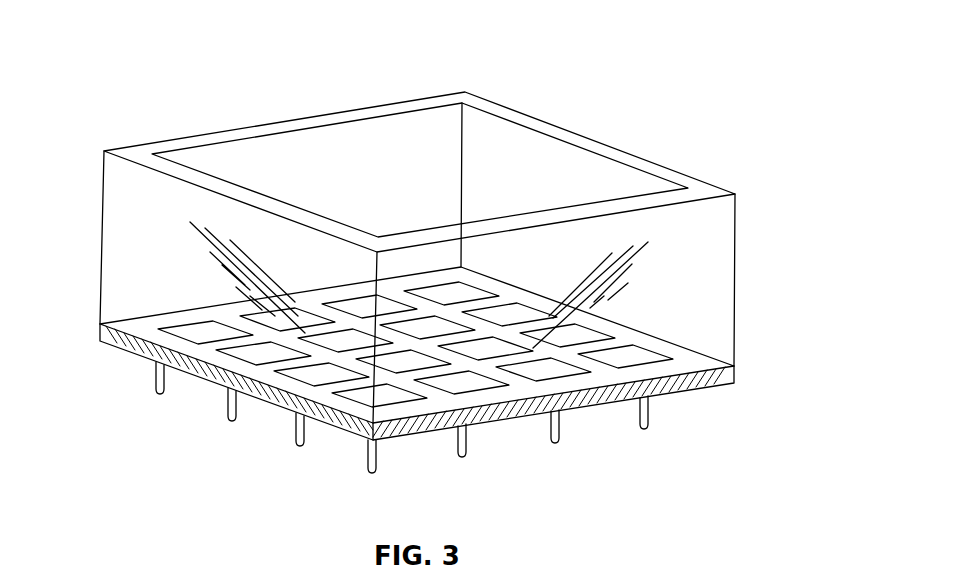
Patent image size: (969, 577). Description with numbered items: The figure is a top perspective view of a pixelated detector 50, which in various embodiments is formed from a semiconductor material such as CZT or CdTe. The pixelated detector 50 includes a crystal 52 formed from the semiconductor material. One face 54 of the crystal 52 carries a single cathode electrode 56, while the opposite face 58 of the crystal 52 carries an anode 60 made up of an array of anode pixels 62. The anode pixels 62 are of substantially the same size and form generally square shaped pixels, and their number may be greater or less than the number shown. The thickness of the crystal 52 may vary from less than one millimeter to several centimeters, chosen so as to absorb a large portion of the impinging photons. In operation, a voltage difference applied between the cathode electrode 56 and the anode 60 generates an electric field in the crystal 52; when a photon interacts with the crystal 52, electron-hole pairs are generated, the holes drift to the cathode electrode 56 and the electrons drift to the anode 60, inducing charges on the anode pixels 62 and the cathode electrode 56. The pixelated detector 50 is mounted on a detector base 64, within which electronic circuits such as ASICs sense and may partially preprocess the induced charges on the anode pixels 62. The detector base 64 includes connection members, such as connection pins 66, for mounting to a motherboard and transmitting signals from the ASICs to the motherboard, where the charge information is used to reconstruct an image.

The pixelated detector 50 is at (136, 40).
The crystal 52 is at (713, 303).
The face 54 is at (140, 155).
The cathode electrode 56 is at (322, 142).
The opposite face 58 is at (165, 362).
The anode 60 is at (135, 292).
The anode pixels 62 is at (193, 332).
The detector base 64 is at (265, 398).
The connection pins 66 is at (301, 448).